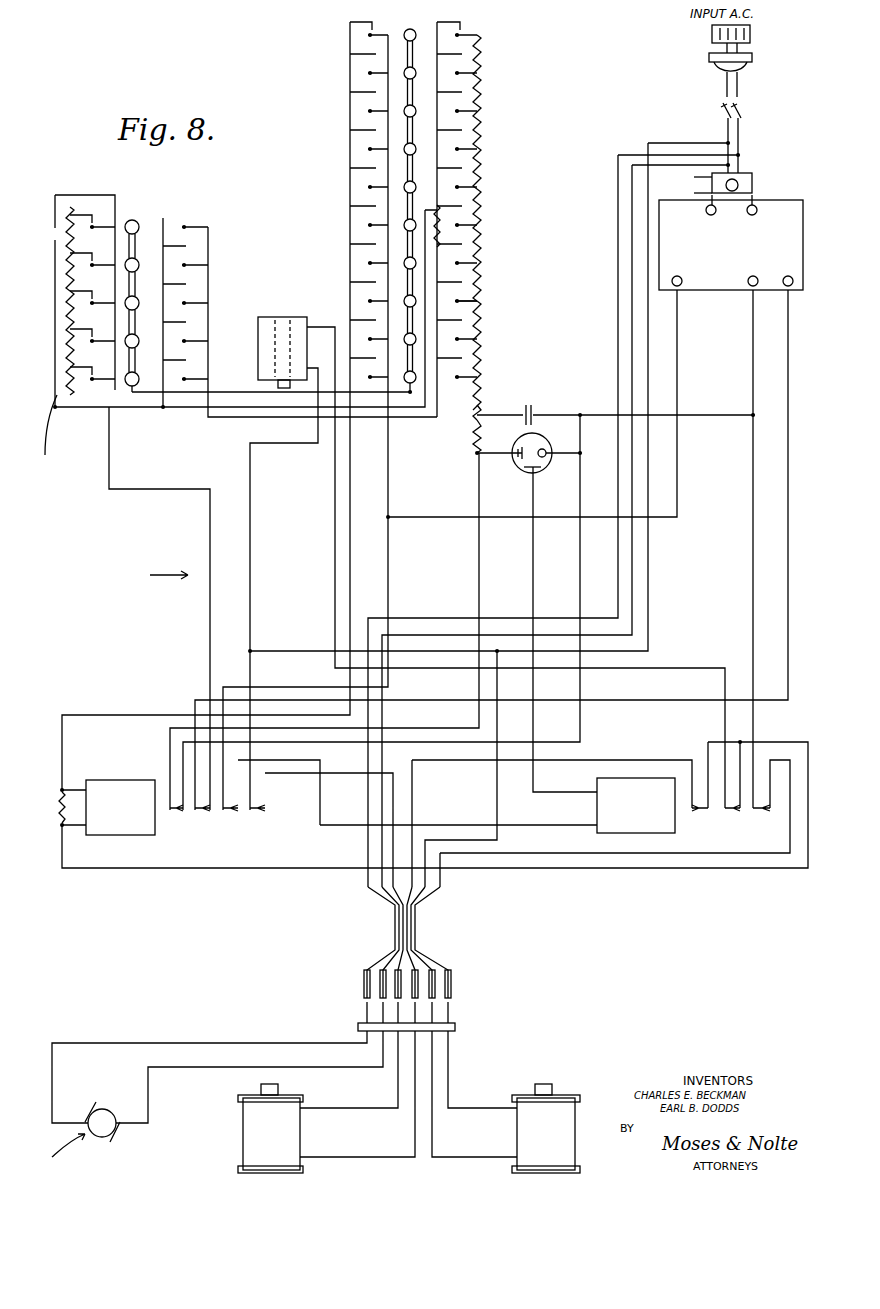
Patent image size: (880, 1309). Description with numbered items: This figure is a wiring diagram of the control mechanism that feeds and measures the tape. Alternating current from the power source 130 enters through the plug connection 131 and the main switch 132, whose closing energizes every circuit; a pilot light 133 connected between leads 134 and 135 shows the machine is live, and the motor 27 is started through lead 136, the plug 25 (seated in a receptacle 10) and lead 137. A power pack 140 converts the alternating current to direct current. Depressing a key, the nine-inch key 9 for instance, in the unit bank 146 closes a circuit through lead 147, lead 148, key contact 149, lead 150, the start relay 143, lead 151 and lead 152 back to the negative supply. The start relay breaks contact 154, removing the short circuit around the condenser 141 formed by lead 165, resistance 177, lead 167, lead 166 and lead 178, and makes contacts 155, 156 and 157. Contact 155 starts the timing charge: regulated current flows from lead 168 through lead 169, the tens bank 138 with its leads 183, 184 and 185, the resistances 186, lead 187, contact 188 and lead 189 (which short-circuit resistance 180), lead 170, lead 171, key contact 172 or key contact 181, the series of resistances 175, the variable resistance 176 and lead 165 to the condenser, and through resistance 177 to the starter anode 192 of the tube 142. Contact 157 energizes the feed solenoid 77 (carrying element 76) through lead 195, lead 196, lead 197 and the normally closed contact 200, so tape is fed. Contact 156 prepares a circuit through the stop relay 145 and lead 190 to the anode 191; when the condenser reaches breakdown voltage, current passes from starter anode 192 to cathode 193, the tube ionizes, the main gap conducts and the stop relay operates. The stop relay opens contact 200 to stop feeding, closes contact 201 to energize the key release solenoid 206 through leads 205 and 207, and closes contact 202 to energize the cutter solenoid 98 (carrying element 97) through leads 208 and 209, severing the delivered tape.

The key No. 9 is at (160, 575).
The connector bar 10 is at (348, 1016).
The plug 25 is at (468, 981).
The A.C. motor 27 is at (103, 1108).
The feed solenoid plunger 76 is at (280, 1090).
The feed solenoid 77 is at (290, 1110).
The cutter solenoid plunger 97 is at (552, 1085).
The cutter solenoid 98 is at (565, 1160).
The power source 130 is at (752, 34).
The connection 131 is at (752, 62).
The switch 132 is at (738, 118).
The pilot light 133 is at (696, 190).
The lead 134 is at (753, 178).
The lead 135 is at (683, 179).
The lead 136 is at (652, 155).
The lead 137 is at (698, 165).
The tens bank of keys 138 is at (149, 194).
The power pack 140 is at (798, 200).
The condenser 141 is at (548, 412).
The tube 142 is at (543, 447).
The start relay 143 is at (100, 835).
The stop relay 145 is at (597, 808).
The unit bank 146 is at (414, 30).
The lead 147 is at (678, 470).
The lead 148 is at (390, 455).
The key contact 149 is at (382, 28).
The lead 150 is at (348, 490).
The lead 151 is at (143, 878).
The lead 152 is at (752, 384).
The contact 154 is at (178, 820).
The contact 155 is at (208, 822).
The contact 156 is at (230, 815).
The contact 157 is at (258, 815).
The lead 165 is at (500, 413).
The lead 166 is at (583, 722).
The lead 167 is at (478, 568).
The lead 168 is at (789, 465).
The lead 169 is at (133, 490).
The lead 170 is at (180, 410).
The lead 171 is at (452, 84).
The key contact 172 is at (462, 37).
The series of resistances 175 is at (482, 180).
The variable resistance 176 is at (480, 405).
The resistance 177 is at (475, 437).
The lead 178 is at (598, 418).
The resistance 180 is at (445, 235).
The key contact 181 is at (465, 302).
The lead 183 is at (100, 322).
The lead 184 is at (92, 297).
The lead 185 is at (84, 301).
The resistances 186 is at (63, 425).
The lead 187 is at (172, 352).
The contact 188 is at (193, 328).
The lead 189 is at (220, 420).
The lead 190 is at (532, 572).
The anode 191 is at (522, 470).
The starter anode 192 is at (524, 447).
The cathode 193 is at (559, 472).
The lead 195 is at (648, 143).
The lead 196 is at (333, 772).
The lead 197 is at (462, 760).
The contact 200 is at (695, 810).
The contact 201 is at (735, 815).
The contact 202 is at (766, 810).
The lead 205 is at (252, 540).
The key release solenoid 206 is at (258, 376).
The lead 207 is at (336, 548).
The lead 208 is at (496, 793).
The lead 209 is at (575, 853).